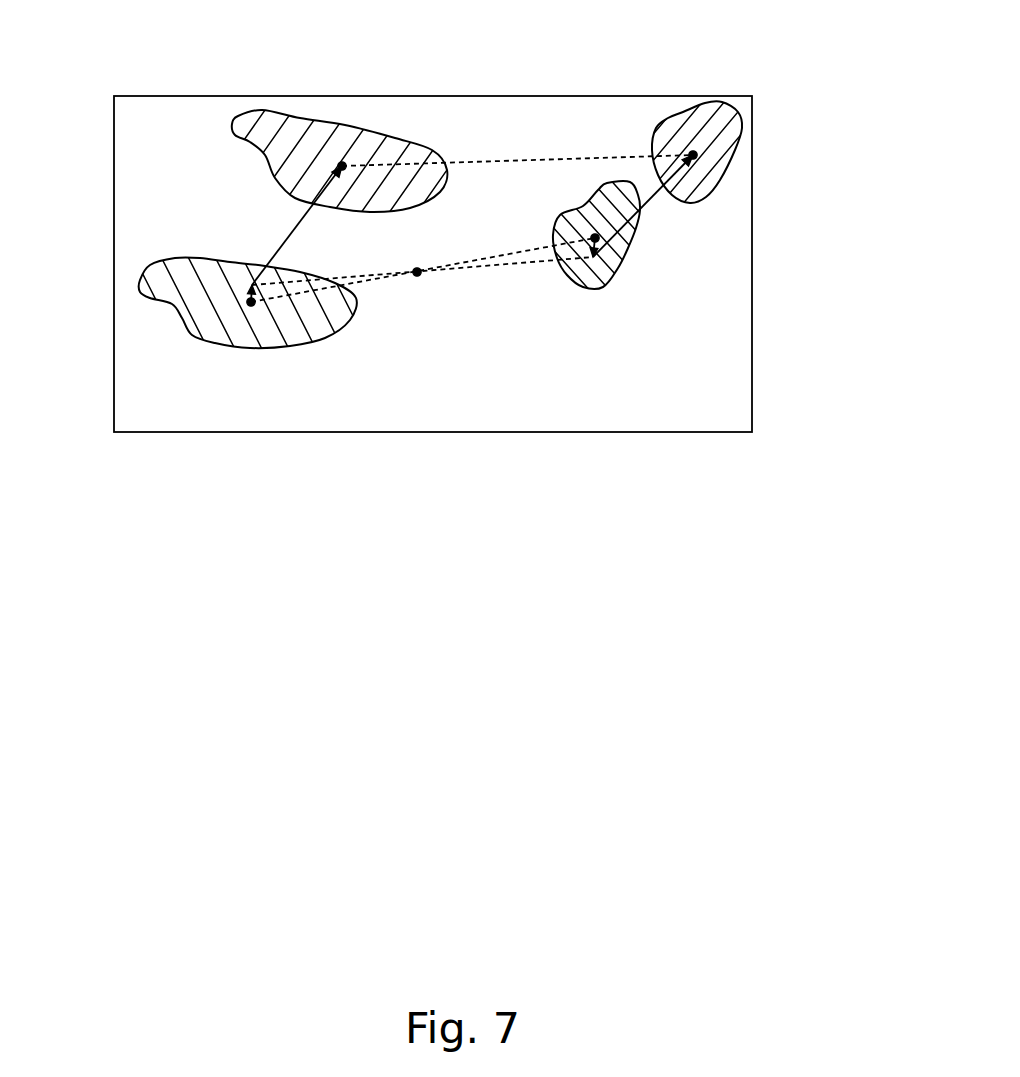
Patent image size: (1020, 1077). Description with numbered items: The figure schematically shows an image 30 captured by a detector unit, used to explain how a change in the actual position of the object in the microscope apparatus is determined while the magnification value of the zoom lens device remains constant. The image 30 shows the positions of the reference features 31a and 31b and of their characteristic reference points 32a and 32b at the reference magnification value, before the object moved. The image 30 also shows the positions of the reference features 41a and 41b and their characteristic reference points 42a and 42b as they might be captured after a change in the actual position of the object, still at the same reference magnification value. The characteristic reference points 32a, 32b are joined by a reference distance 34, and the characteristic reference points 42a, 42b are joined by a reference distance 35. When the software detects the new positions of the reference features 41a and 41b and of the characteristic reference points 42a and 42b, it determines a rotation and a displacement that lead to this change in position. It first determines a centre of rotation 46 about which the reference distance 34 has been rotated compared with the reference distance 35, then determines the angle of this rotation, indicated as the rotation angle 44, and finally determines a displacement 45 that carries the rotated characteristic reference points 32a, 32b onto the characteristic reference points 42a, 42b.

The image 30 is at (730, 432).
The reference feature 31a is at (617, 282).
The reference feature 31b is at (193, 340).
The characteristic reference point 32a is at (595, 238).
The characteristic reference point 32b is at (251, 302).
The reference distance 34 is at (360, 283).
The reference distance 35 is at (460, 162).
The reference feature 41a is at (663, 122).
The reference feature 41b is at (257, 148).
The characteristic reference point 42a is at (693, 155).
The characteristic reference point 42b is at (342, 166).
The rotation angle 44 is at (252, 285).
The displacement 45 is at (677, 242).
The centre of rotation 46 is at (417, 272).